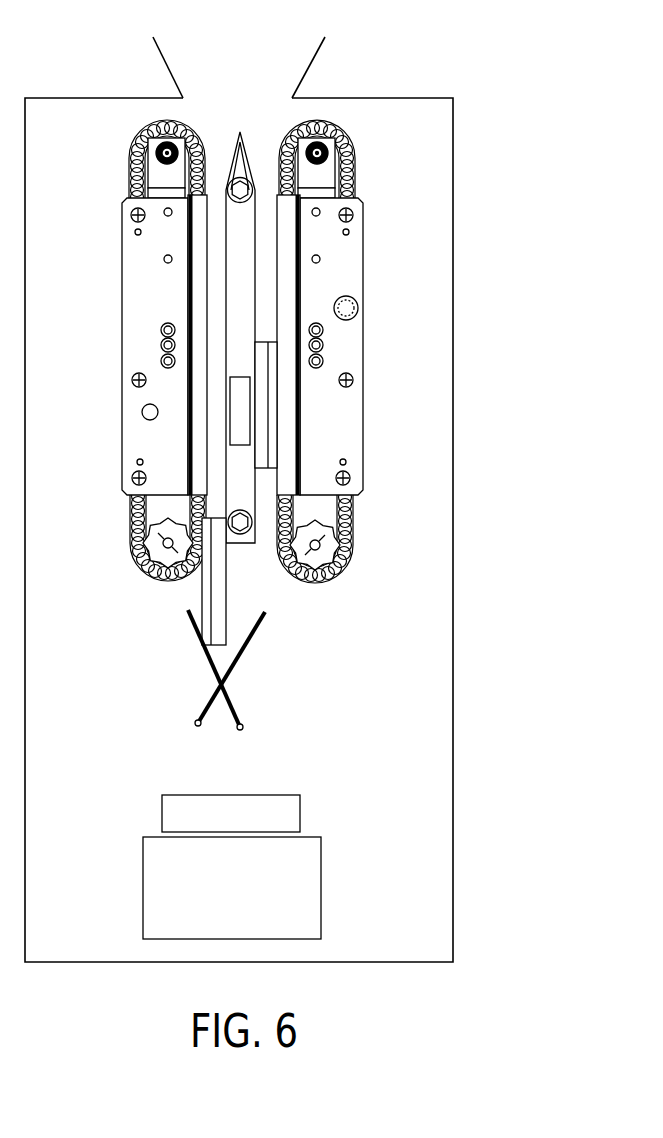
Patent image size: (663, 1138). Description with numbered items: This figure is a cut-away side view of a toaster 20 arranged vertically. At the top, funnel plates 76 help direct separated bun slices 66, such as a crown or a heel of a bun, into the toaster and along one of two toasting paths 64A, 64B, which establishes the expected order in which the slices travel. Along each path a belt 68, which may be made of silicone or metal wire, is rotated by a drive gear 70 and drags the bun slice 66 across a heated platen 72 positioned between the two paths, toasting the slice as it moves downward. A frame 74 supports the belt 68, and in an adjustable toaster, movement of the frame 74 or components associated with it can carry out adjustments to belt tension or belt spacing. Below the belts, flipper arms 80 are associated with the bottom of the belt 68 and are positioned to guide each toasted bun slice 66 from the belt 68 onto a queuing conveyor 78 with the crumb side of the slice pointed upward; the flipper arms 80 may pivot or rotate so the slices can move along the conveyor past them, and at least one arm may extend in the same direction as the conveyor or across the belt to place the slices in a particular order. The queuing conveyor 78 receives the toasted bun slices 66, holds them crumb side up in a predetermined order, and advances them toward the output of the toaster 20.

The toaster 20 is at (500, 110).
The funnel plates 76 is at (167, 65).
The toasting path 64A is at (222, 121).
The toasting path 64B is at (268, 121).
The heated platen 72 is at (240, 152).
The belt 68 is at (137, 142).
The drive gear 70 is at (138, 177).
The frame 74 is at (130, 296).
The bun slice 66 is at (262, 397).
The flipper arms 80 is at (208, 662).
The queuing conveyor 78 is at (322, 885).